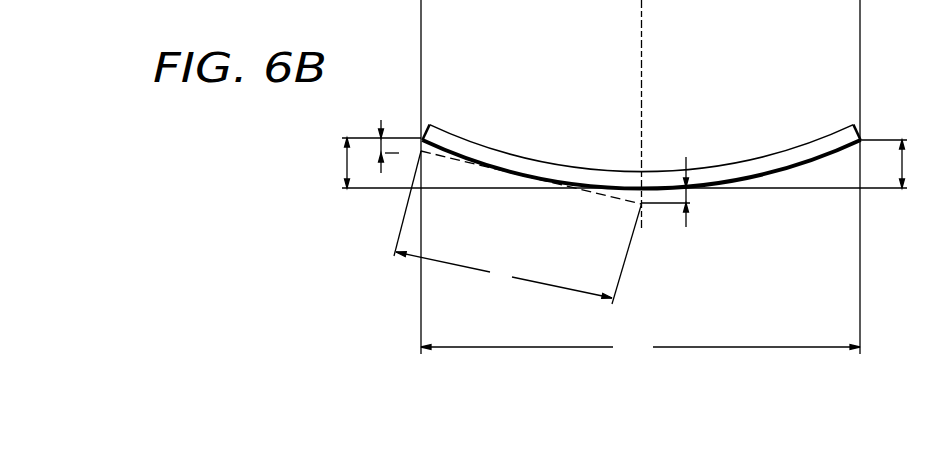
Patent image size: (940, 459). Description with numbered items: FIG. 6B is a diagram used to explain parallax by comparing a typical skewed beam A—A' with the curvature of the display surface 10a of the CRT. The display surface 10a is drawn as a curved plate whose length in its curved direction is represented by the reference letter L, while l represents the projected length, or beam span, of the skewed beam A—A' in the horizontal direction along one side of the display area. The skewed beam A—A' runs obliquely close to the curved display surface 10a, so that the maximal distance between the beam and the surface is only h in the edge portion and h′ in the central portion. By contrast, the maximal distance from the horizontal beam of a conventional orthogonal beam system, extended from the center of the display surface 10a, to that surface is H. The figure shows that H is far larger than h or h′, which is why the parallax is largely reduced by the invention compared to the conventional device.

The display surface 10a is at (782, 177).
The maximal distance from horizontal beam H is at (626, 163).
The maximal distance at edge portion h is at (380, 148).
The maximal distance at central portion h′ is at (686, 190).
The skewed beam A is at (545, 185).
The projected length l is at (518, 227).
The length of display surface L is at (640, 346).